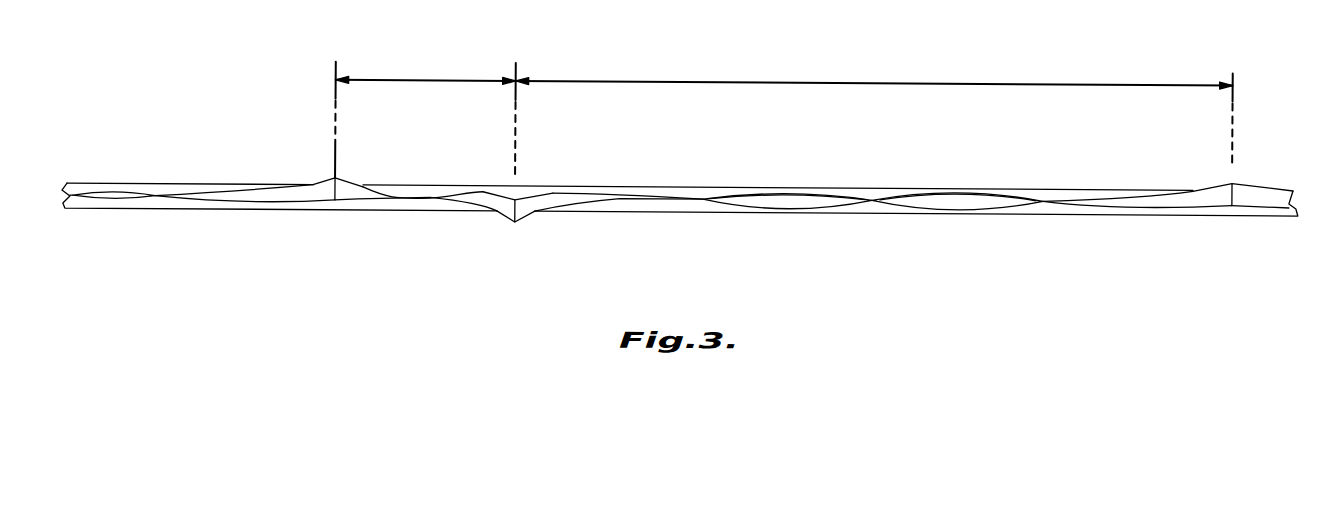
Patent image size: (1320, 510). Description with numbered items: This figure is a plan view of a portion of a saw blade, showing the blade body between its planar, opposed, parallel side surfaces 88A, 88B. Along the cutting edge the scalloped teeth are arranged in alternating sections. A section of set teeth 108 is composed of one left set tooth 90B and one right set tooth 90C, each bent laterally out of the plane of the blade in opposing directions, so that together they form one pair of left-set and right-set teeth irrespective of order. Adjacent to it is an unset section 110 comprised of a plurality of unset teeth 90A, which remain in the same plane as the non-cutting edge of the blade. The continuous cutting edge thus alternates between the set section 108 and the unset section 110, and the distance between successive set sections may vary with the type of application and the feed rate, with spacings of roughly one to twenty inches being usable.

The side surface 88A is at (905, 209).
The side surface 88B is at (782, 188).
The unset teeth 90A is at (153, 195).
The left set tooth 90B is at (507, 201).
The right set tooth 90C is at (322, 190).
The section of set teeth 108 is at (420, 76).
The unset section 110 is at (870, 76).